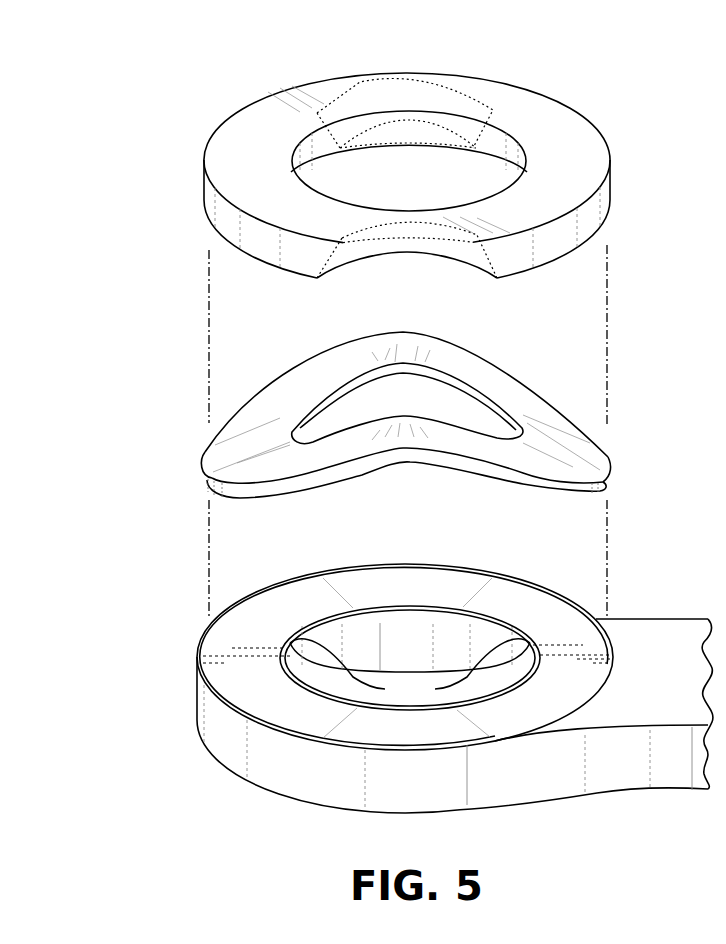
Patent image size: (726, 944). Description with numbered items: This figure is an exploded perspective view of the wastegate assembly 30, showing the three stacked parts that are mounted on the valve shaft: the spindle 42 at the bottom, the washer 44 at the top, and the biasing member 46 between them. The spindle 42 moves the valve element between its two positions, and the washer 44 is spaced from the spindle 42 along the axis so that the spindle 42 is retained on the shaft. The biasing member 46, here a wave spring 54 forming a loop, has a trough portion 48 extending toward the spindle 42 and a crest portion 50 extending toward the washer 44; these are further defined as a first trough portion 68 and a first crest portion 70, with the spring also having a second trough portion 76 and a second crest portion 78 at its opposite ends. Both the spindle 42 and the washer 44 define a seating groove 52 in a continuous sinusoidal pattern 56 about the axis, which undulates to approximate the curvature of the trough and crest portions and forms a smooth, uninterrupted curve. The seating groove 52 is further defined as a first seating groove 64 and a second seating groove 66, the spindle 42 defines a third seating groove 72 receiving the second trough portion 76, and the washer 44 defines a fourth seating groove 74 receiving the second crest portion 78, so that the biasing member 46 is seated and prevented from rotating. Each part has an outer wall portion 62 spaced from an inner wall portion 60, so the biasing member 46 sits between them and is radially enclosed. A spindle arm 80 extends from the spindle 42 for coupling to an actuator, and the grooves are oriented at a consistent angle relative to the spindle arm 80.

The wastegate assembly 30 is at (243, 75).
The spindle 42 is at (217, 725).
The washer 44 is at (558, 118).
The biasing member 46 is at (406, 415).
The trough portion 48 is at (427, 453).
The crest portion 50 is at (470, 415).
The seating groove 52 is at (417, 345).
The wave spring 54 is at (518, 398).
The continuous sinusoidal pattern 56 is at (373, 102).
The inner wall portion 60 is at (415, 147).
The outer wall portion 62 is at (198, 650).
The first seating groove 64 is at (247, 644).
The second seating groove 66 is at (348, 268).
The first trough portion 68 is at (213, 457).
The first crest portion 70 is at (408, 345).
The third seating groove 72 is at (563, 640).
The fourth seating groove 74 is at (405, 91).
The second trough portion 76 is at (597, 457).
The second crest portion 78 is at (403, 437).
The spindle arm 80 is at (637, 697).